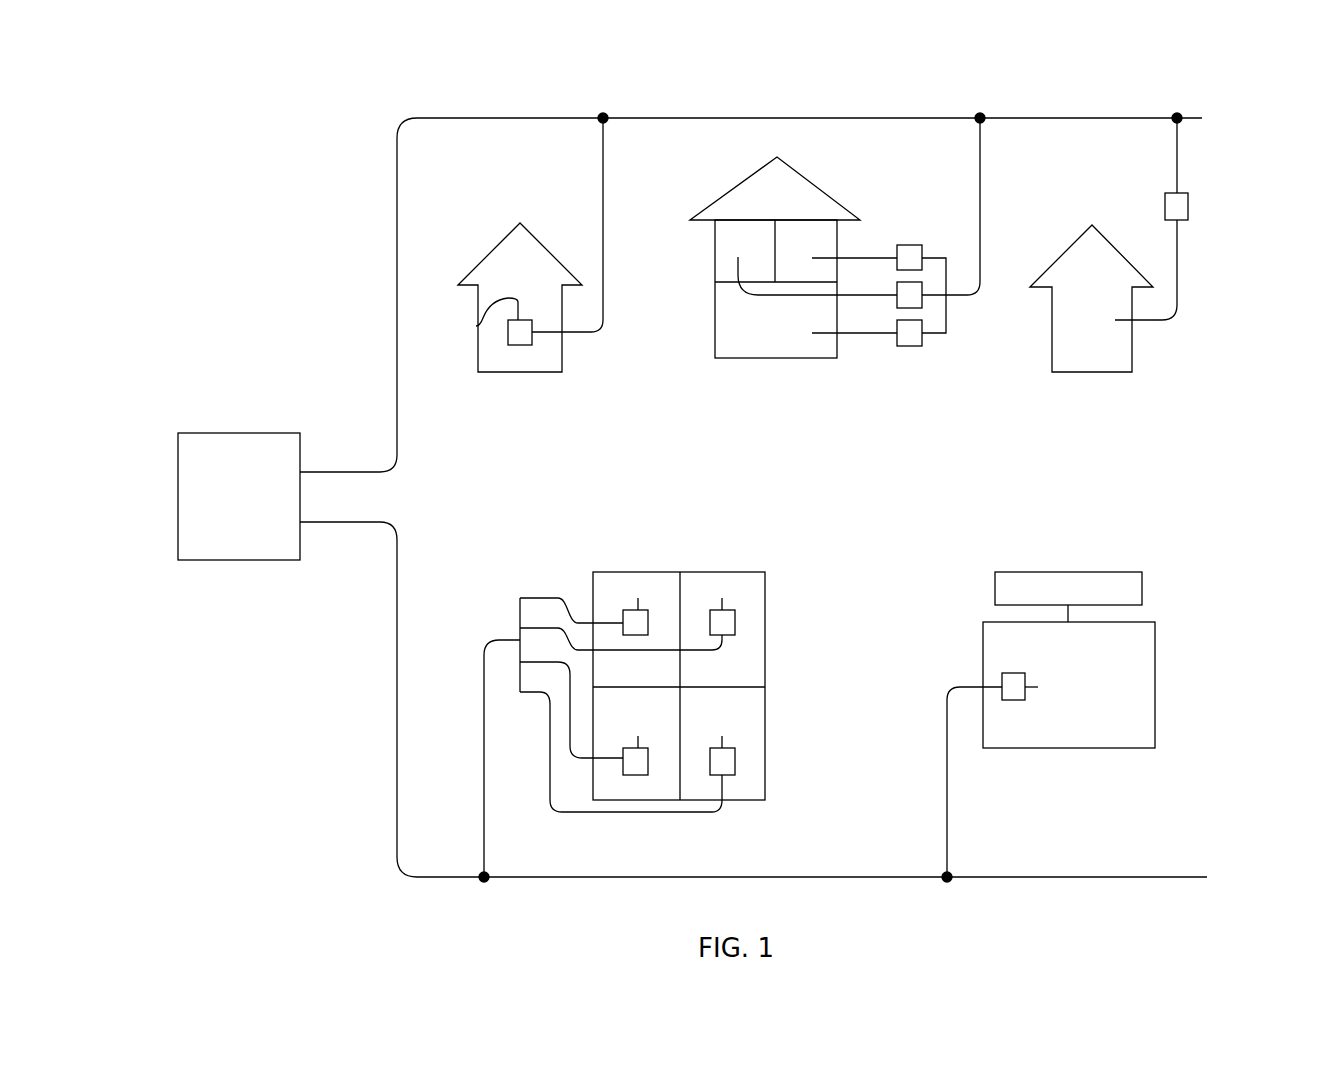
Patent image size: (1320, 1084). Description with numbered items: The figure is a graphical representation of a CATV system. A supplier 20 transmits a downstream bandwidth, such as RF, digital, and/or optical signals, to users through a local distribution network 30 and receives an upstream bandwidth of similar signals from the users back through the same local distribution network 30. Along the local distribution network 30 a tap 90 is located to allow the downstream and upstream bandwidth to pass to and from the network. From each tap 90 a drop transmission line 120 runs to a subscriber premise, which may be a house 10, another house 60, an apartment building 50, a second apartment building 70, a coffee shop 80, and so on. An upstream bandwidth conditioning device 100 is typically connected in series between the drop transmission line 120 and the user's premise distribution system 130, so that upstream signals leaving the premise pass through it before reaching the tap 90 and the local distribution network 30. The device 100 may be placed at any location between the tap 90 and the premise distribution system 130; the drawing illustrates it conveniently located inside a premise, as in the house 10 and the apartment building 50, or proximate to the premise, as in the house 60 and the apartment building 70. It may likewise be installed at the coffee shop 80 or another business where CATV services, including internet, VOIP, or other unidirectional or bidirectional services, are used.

The house 10 is at (534, 386).
The supplier 20 is at (227, 445).
The local distribution network 30 is at (717, 117).
The apartment building 50 is at (789, 378).
The house 60 is at (1093, 380).
The apartment building 70 is at (717, 547).
The coffee shop 80 is at (1174, 591).
The tap 90 is at (604, 114).
The upstream bandwidth conditioning device 100 is at (525, 345).
The drop transmission line 120 is at (603, 190).
The user's premise distribution system 130 is at (476, 326).